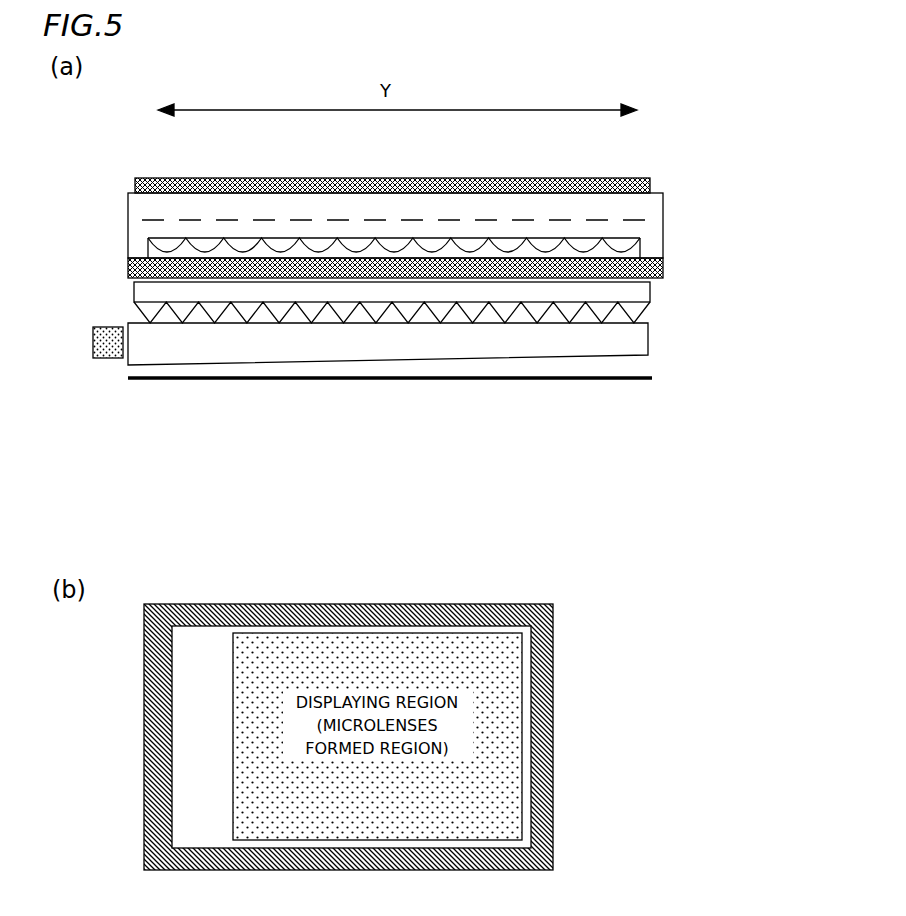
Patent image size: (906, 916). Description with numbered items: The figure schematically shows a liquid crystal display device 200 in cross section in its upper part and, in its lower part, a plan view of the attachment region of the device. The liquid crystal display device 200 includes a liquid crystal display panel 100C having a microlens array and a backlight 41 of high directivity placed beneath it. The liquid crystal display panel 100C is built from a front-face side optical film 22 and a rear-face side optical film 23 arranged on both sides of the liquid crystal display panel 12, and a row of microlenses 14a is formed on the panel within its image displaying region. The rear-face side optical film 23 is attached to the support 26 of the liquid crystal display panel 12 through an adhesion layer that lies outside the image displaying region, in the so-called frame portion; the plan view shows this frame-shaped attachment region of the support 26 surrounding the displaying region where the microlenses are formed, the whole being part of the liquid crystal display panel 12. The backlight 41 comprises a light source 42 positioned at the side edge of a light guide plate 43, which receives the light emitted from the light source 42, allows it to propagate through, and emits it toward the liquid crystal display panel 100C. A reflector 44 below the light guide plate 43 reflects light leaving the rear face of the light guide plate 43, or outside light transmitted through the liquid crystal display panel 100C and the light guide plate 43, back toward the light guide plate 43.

The liquid crystal display device 200 is at (667, 137).
The front-face side optical film 22 is at (652, 182).
The liquid crystal display panel 12 is at (663, 218).
The support 26 is at (138, 246).
The microlens 14a is at (510, 243).
The rear-face side optical film 23 is at (663, 268).
The liquid crystal display panel 100C is at (757, 173).
The backlight 41 is at (334, 359).
The light source 42 is at (107, 327).
The light guide plate 43 is at (125, 359).
The reflector 44 is at (361, 407).